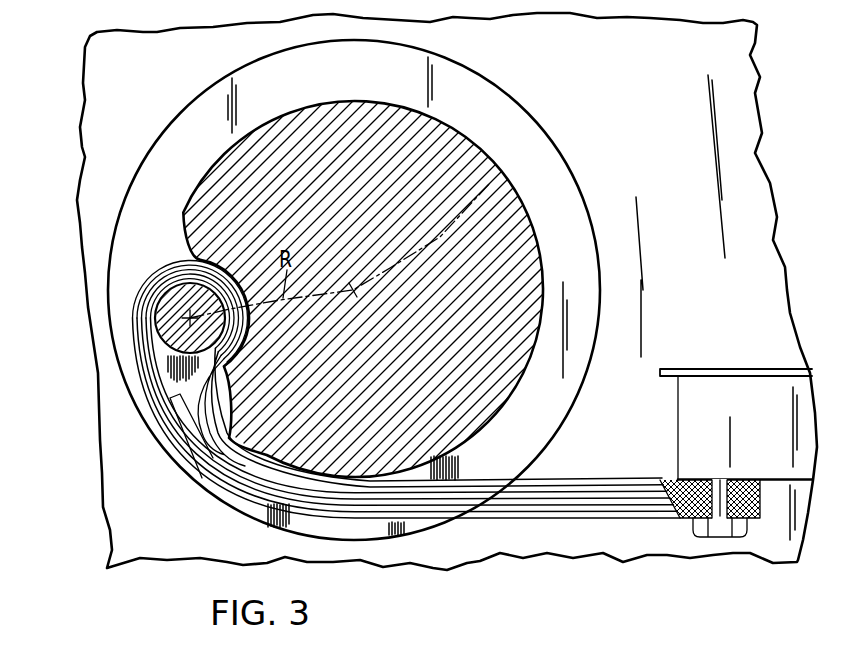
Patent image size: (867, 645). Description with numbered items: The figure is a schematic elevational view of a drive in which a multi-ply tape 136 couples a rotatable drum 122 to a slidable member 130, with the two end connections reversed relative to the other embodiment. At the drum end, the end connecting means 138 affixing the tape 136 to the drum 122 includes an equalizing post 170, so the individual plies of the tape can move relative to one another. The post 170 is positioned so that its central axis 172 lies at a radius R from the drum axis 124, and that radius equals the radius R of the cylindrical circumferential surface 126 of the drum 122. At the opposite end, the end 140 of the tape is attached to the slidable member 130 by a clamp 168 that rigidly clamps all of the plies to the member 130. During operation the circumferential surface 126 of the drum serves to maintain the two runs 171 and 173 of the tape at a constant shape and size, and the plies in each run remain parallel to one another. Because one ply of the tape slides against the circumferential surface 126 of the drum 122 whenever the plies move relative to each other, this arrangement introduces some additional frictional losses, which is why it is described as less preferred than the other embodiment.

The drum 122 is at (462, 167).
The drum axis 124 is at (490, 183).
The cylindrical circumferential surface 126 is at (490, 421).
The slidable member 130 is at (713, 395).
The tape 136 is at (538, 518).
The end connecting means 138 is at (120, 404).
The end of the tape 140 is at (676, 527).
The clamp 168 is at (725, 538).
The equalizing post 170 is at (145, 296).
The run 171 is at (212, 445).
The central axis of the post 172 is at (183, 283).
The run 173 is at (175, 398).